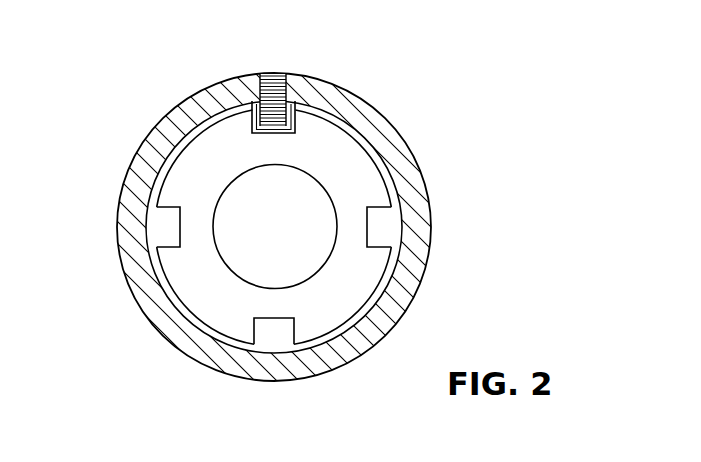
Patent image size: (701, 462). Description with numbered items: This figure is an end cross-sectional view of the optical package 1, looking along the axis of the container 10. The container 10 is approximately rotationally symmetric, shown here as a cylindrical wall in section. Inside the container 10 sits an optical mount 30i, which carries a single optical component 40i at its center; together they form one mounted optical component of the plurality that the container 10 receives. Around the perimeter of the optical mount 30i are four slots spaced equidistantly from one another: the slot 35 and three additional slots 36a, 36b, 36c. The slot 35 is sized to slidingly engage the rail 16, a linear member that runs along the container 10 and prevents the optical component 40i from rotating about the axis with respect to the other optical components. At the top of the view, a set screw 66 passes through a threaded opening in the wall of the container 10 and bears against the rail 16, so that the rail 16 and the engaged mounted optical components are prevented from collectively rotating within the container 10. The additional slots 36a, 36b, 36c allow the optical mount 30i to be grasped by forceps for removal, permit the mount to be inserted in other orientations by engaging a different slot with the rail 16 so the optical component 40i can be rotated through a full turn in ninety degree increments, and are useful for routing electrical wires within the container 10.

The optical package 1 is at (90, 58).
The container 10 is at (404, 165).
The slot 35 is at (178, 172).
The optical mount 30i is at (195, 291).
The additional slot 36a is at (165, 225).
The additional slot 36b is at (271, 340).
The additional slot 36c is at (392, 226).
The rail 16 is at (282, 128).
The set screw 66 is at (270, 82).
The optical component 40i is at (291, 238).